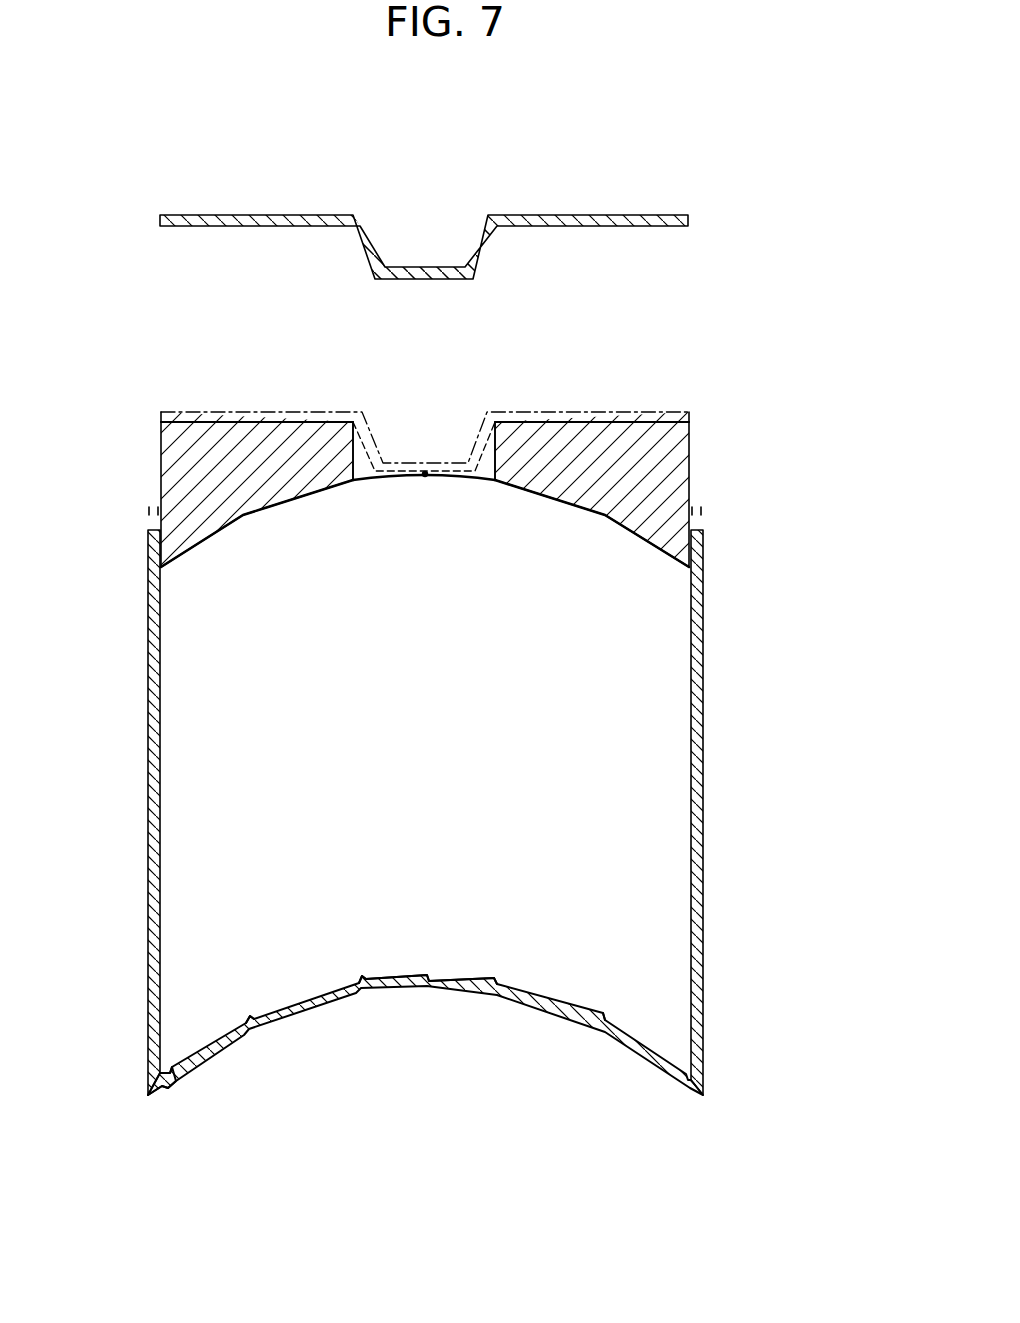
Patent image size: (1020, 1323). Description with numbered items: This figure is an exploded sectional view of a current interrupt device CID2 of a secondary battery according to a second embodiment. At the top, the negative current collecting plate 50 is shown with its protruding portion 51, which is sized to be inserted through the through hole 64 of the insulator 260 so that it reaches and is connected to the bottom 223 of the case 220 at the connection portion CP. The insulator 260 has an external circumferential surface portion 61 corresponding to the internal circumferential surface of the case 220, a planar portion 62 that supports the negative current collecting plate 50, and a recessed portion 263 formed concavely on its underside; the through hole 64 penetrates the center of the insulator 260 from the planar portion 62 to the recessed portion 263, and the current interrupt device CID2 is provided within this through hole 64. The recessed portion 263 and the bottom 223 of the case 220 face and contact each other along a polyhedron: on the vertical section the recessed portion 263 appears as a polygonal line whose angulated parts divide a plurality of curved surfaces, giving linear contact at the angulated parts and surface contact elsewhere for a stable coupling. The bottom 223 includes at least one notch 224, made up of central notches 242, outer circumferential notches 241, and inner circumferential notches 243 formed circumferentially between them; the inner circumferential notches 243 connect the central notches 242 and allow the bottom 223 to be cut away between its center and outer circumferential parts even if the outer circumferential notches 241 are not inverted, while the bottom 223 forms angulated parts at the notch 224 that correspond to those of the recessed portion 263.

The negative current collecting plate 50 is at (463, 286).
The protruding portion 51 is at (430, 279).
The planar portion 62 is at (260, 421).
The external circumferential surface portion 61 is at (177, 473).
The insulator 260 is at (436, 498).
The recessed portion 263 is at (225, 527).
The through hole 64 is at (357, 466).
The connection portion CP is at (426, 477).
The current interrupt device CID2 is at (470, 505).
The case 220 is at (704, 777).
The bottom 223 is at (551, 1022).
The outer circumferential notches 241 is at (170, 1076).
The inner circumferential notches 243 is at (362, 988).
The central notches 242 is at (427, 984).
The notch 224 is at (376, 1098).